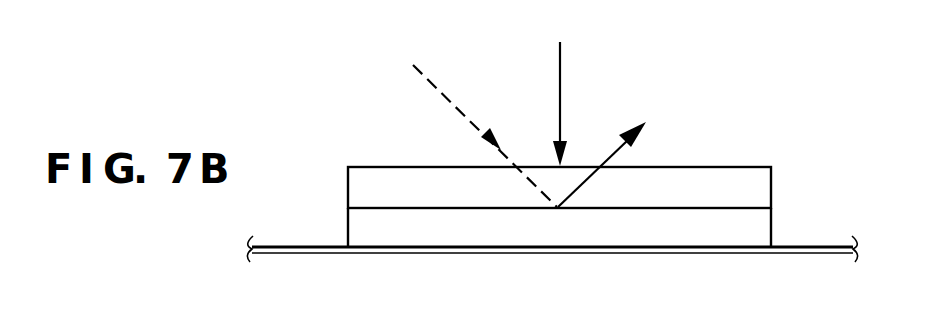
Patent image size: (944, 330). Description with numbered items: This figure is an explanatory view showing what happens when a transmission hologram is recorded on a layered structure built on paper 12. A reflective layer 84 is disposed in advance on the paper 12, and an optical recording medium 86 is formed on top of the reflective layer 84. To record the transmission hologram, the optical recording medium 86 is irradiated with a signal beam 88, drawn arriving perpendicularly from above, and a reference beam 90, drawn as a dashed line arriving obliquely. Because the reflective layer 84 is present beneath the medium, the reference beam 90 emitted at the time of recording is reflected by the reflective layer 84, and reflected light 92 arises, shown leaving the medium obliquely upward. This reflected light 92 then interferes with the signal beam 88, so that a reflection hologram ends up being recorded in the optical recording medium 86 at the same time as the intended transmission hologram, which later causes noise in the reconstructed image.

The paper 12 is at (830, 253).
The reflective layer 84 is at (707, 238).
The optical recording medium 86 is at (771, 183).
The signal beam 88 is at (560, 68).
The reference beam 90 is at (447, 98).
The reflected light 92 is at (615, 156).